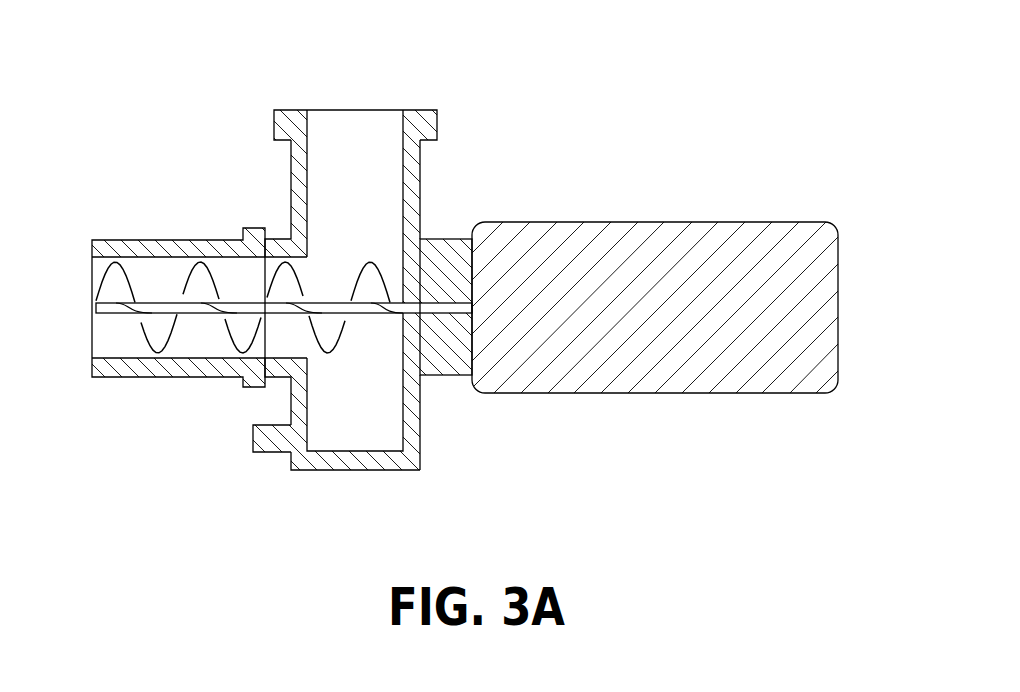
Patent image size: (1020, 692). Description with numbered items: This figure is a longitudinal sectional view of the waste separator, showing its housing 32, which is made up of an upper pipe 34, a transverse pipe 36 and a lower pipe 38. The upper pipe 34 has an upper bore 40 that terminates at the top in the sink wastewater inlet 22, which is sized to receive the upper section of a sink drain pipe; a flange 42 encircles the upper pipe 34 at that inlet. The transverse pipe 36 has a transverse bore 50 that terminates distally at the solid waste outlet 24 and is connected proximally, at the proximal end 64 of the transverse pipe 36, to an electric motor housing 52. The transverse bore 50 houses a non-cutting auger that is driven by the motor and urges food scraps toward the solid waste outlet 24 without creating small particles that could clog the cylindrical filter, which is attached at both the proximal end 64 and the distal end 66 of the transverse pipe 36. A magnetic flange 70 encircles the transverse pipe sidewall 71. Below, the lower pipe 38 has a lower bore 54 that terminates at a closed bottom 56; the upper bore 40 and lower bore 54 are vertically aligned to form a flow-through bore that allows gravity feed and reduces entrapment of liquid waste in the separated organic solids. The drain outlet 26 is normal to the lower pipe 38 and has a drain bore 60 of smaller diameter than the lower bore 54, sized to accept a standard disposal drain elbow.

The sink wastewater inlet 22 is at (356, 110).
The solid waste outlet 24 is at (92, 316).
The drain outlet 26 is at (253, 437).
The housing 32 is at (616, 68).
The upper pipe 34 is at (420, 207).
The transverse pipe 36 is at (102, 240).
The lower pipe 38 is at (422, 457).
The upper bore 40 is at (392, 170).
The flange 42 is at (437, 128).
The transverse bore 50 is at (170, 268).
The electric motor housing 52 is at (725, 375).
The lower bore 54 is at (377, 423).
The closed bottom 56 is at (317, 470).
The drain bore 60 is at (267, 440).
The proximal end 64 is at (443, 377).
The distal end 66 is at (98, 380).
The magnetic flange 70 is at (252, 228).
The transverse pipe sidewall 71 is at (130, 240).